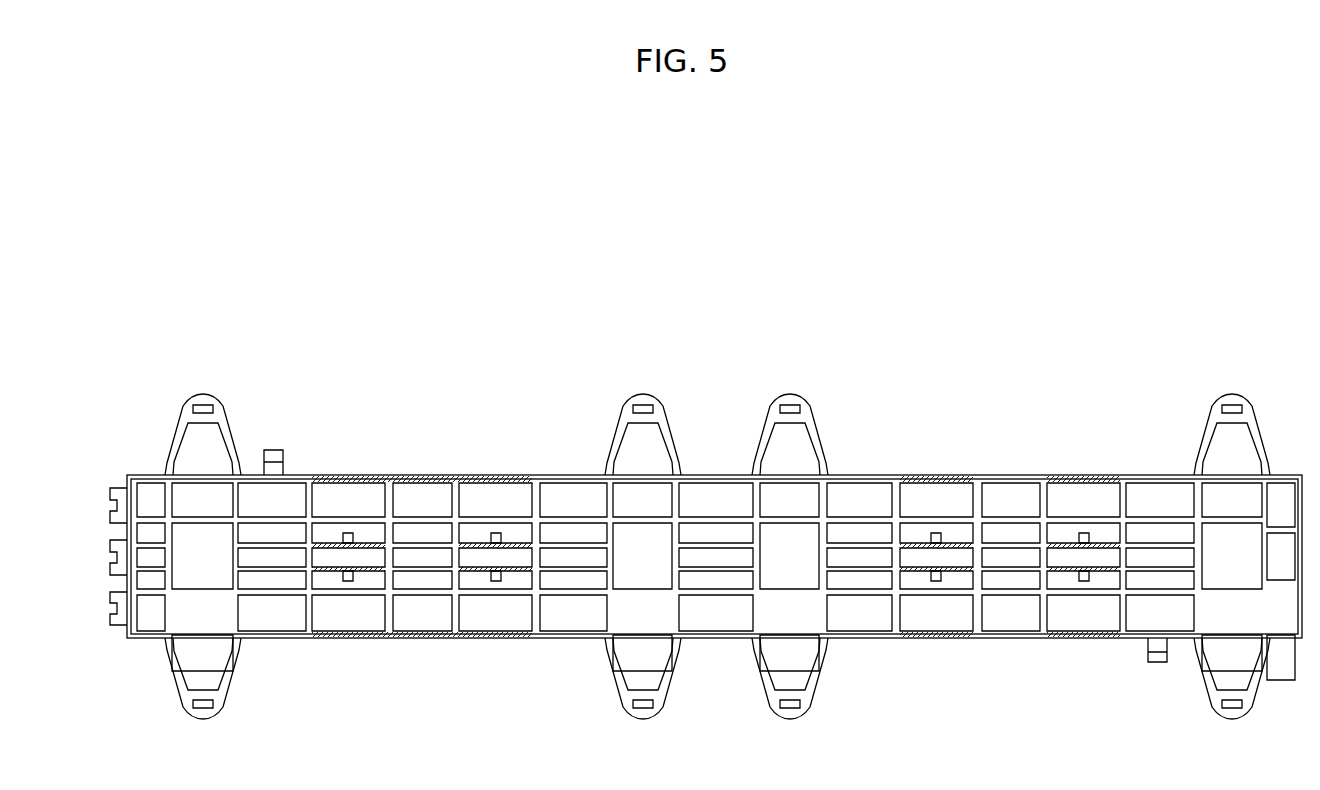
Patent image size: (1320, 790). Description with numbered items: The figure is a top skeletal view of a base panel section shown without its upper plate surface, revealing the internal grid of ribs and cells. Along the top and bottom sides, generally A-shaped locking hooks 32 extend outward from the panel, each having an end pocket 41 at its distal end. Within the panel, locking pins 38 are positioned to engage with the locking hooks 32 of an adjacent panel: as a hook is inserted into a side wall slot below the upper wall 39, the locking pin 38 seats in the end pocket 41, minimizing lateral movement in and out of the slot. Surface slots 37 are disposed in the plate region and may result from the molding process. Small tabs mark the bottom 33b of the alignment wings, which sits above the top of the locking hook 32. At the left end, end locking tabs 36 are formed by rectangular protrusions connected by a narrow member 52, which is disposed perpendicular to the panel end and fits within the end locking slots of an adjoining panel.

The locking hook 32 is at (663, 418).
The end pocket 41 is at (787, 411).
The surface slots 37 is at (313, 490).
The upper wall 39 is at (1063, 522).
The locking pin 38 is at (936, 536).
The bottom of alignment wing 33b is at (275, 460).
The narrow member 52 is at (120, 497).
The end locking tabs 36 is at (112, 503).